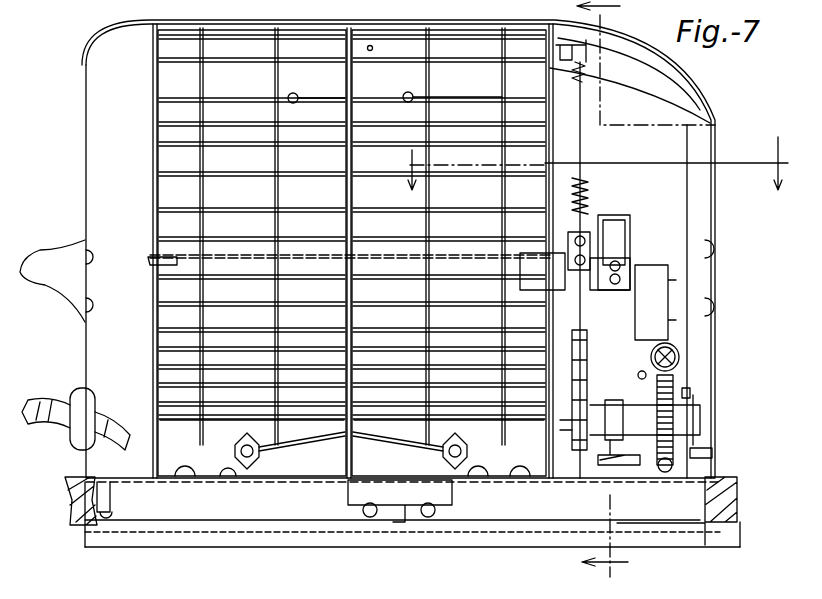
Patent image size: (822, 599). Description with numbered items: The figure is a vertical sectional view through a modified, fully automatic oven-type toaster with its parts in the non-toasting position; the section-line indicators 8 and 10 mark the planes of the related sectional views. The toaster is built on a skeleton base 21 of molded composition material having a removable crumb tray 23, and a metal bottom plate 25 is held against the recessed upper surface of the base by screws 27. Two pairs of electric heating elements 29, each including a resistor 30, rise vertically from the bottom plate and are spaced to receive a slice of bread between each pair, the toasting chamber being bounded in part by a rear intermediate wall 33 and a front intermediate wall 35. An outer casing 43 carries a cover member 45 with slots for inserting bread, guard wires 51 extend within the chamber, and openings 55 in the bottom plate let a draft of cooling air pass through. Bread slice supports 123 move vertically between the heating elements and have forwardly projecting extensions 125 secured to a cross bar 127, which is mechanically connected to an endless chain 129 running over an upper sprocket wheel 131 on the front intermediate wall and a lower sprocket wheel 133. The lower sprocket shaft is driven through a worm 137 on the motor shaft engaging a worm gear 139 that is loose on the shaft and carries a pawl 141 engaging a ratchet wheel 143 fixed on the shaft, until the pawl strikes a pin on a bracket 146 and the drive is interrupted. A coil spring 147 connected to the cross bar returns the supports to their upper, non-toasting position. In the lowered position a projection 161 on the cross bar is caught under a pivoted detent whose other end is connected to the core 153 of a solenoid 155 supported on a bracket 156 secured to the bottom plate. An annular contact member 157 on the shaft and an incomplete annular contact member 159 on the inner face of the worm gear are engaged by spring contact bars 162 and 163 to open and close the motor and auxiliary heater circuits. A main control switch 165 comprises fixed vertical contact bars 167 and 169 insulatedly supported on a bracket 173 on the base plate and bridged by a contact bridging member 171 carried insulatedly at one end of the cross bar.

The section line 8- 8 is at (646, 299).
The section line 10- 10 is at (589, 173).
The base 21 is at (75, 500).
The crumb tray 23 is at (197, 537).
The bottom plate 25 is at (118, 480).
The screws 27 is at (745, 512).
The electric heating elements 29 is at (172, 88).
The resistor 30 is at (445, 118).
The rear intermediate wall 33 is at (153, 218).
The front intermediate wall 35 is at (553, 140).
The outer casing 43 is at (719, 198).
The cover member 45 is at (697, 82).
The guard wires 51 is at (348, 157).
The openings 55 is at (312, 480).
The bread slice supports 123 is at (445, 256).
The forwardly projecting extensions 125 is at (525, 288).
The endless chain 129 is at (550, 313).
The upper sprocket wheel 131 is at (560, 190).
The cross bar 127 is at (553, 234).
The lower sprocket wheel 133 is at (575, 422).
The worm 137 is at (646, 375).
The worm gear 139 is at (712, 455).
The pawl 141 is at (675, 385).
The ratchet wheel 143 is at (700, 410).
The bracket 146 is at (690, 432).
The coil spring 147 is at (590, 180).
The core 153 is at (668, 322).
The solenoid 155 is at (660, 298).
The bracket 156 is at (679, 357).
The annular contact member 157 is at (598, 452).
The incomplete flat annular contact member 159 is at (655, 470).
The projection 161 is at (565, 280).
The spring contact bar 162 is at (572, 388).
The spring contact bar 163 is at (645, 470).
The main control switch 165 is at (650, 226).
The contact bar 167 is at (615, 305).
The contact bar 169 is at (627, 310).
The contact bridging member 171 is at (615, 215).
The bracket 173 is at (640, 215).